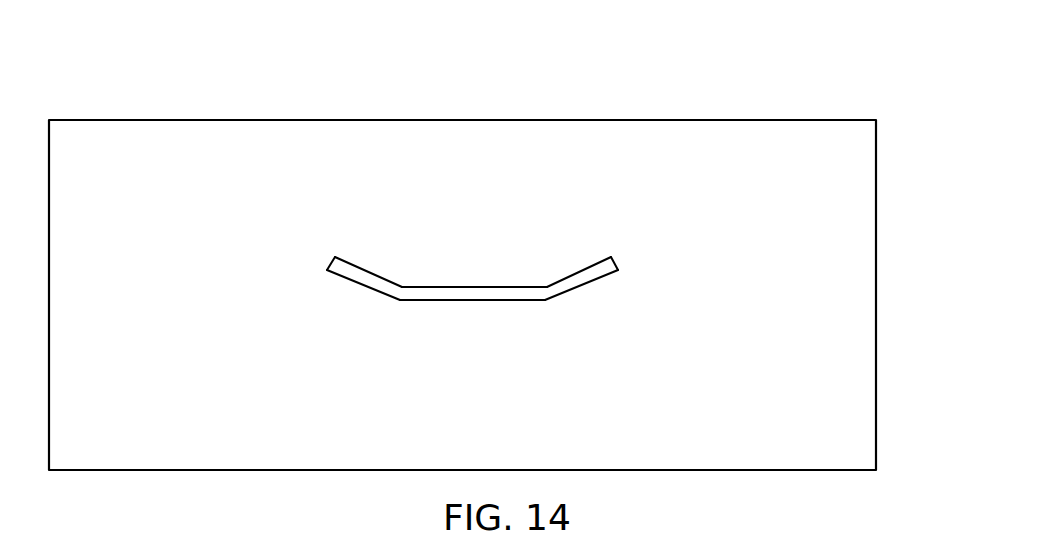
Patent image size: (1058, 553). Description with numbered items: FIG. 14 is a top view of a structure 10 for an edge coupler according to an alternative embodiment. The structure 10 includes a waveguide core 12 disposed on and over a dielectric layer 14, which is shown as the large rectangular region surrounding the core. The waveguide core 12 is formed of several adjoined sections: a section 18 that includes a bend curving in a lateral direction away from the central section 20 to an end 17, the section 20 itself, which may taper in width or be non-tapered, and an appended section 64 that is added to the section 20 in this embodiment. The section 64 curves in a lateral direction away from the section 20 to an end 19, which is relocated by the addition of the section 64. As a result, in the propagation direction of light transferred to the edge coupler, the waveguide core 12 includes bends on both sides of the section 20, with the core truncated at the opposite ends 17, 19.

The structure 10 is at (135, 85).
The waveguide core 12 is at (473, 302).
The dielectric layer 14 is at (832, 421).
The end 17 is at (327, 267).
The section 18 is at (371, 284).
The end 19 is at (616, 263).
The section 20 is at (453, 293).
The section 64 is at (587, 282).